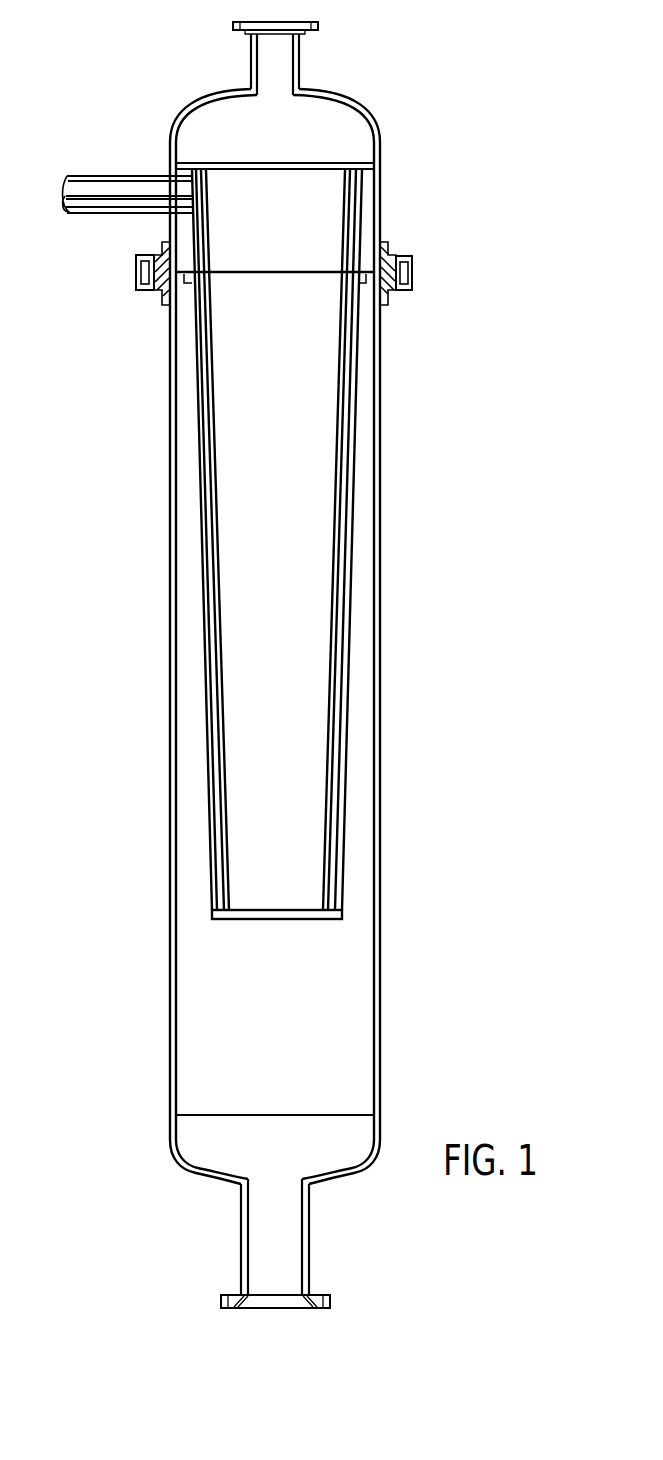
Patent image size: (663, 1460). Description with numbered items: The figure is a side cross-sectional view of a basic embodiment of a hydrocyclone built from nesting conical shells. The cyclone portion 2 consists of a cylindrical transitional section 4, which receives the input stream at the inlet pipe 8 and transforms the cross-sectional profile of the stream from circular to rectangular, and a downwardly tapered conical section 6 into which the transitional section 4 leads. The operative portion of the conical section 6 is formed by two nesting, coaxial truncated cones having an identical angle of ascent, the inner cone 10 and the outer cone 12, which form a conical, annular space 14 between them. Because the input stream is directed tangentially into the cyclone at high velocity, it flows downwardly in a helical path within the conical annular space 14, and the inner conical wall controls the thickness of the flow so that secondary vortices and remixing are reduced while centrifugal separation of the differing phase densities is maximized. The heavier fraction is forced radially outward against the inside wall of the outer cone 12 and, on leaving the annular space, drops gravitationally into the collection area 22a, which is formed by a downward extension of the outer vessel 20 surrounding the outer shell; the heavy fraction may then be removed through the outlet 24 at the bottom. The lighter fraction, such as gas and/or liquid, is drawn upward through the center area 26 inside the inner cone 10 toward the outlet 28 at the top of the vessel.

The cyclone portion 2 is at (170, 512).
The cylindrical transitional section 4 is at (470, 169).
The conical section 6 is at (470, 283).
The inlet pipe 8 is at (122, 196).
The inner cone 10 is at (352, 596).
The outer cone 12 is at (354, 511).
The conical annular space 14 is at (340, 700).
The outer vessel 20 is at (382, 362).
The collection area 22a is at (345, 1060).
The outlet 24 is at (278, 1248).
The center area 26 is at (297, 805).
The outlet 28 is at (283, 70).